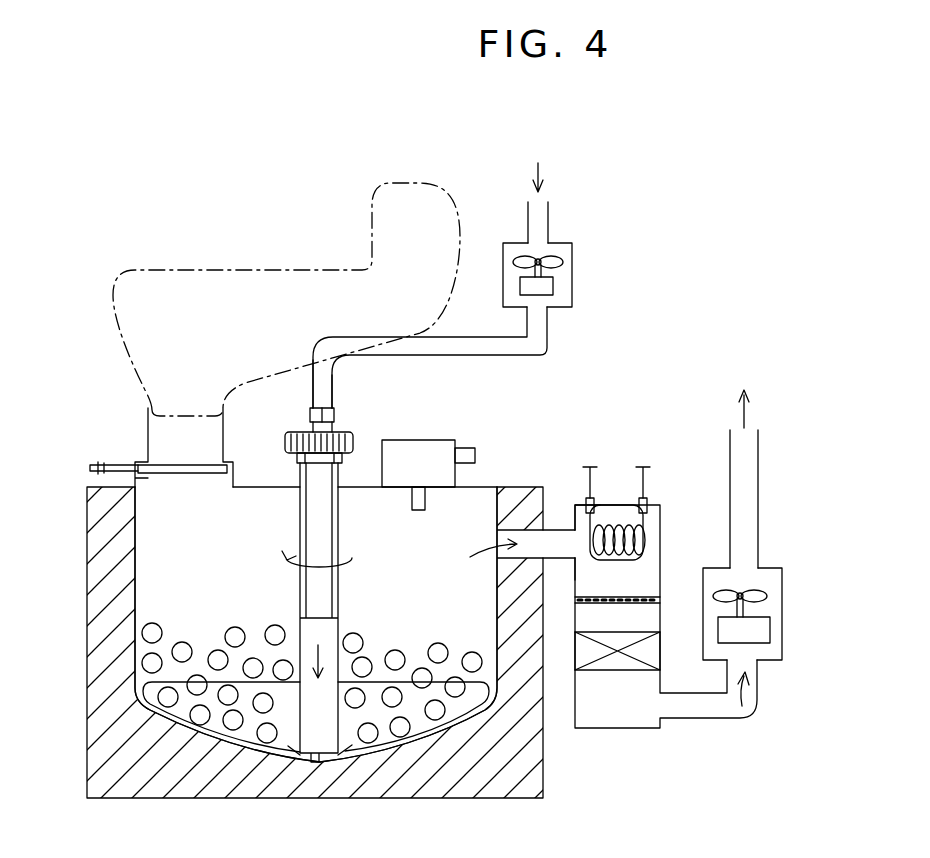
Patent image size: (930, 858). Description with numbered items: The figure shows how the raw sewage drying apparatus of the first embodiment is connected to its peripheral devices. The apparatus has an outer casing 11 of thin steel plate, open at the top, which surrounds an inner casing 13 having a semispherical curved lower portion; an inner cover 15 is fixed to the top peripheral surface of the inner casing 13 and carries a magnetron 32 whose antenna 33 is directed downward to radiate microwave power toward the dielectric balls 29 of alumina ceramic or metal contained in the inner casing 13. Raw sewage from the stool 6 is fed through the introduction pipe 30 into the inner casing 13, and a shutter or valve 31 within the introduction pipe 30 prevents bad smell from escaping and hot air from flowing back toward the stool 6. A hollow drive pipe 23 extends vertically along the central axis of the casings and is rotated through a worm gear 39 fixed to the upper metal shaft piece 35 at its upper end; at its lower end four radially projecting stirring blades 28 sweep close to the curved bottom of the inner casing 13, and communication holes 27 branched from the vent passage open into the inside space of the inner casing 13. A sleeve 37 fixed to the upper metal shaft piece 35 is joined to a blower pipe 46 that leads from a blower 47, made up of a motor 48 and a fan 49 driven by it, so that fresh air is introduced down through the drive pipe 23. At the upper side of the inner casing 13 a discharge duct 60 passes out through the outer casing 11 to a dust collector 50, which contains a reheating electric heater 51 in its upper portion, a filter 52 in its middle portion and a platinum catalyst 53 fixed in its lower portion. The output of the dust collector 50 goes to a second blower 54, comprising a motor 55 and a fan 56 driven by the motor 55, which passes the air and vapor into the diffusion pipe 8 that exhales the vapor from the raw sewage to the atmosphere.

The stool 6 is at (228, 266).
The diffusion pipe 8 is at (758, 470).
The outer casing 11 is at (87, 735).
The inner casing 13 is at (135, 535).
The inner cover 15 is at (480, 488).
The hollow drive pipe 23 is at (338, 508).
The communication holes 27 is at (290, 756).
The stirring blades 28 is at (247, 742).
The dielectric elements 29 is at (228, 638).
The introduction pipe 30 is at (148, 428).
The shutter or valve 31 is at (180, 474).
The magnetron 32 is at (425, 452).
The antenna 33 is at (420, 510).
The upper metal shaft piece 35 is at (334, 410).
The sleeve 37 is at (310, 414).
The worm gear 39 is at (285, 441).
The blower pipe 46 is at (492, 356).
The blower 47 is at (558, 243).
The motor 48 is at (553, 288).
The fan 49 is at (560, 258).
The dust collector 50 is at (626, 728).
The reheating electric heater 51 is at (646, 540).
The filter 52 is at (645, 603).
The catalyst 53 is at (612, 666).
The blower 54 is at (782, 640).
The motor 55 is at (760, 650).
The fan 56 is at (772, 594).
The discharge duct 60 is at (575, 515).